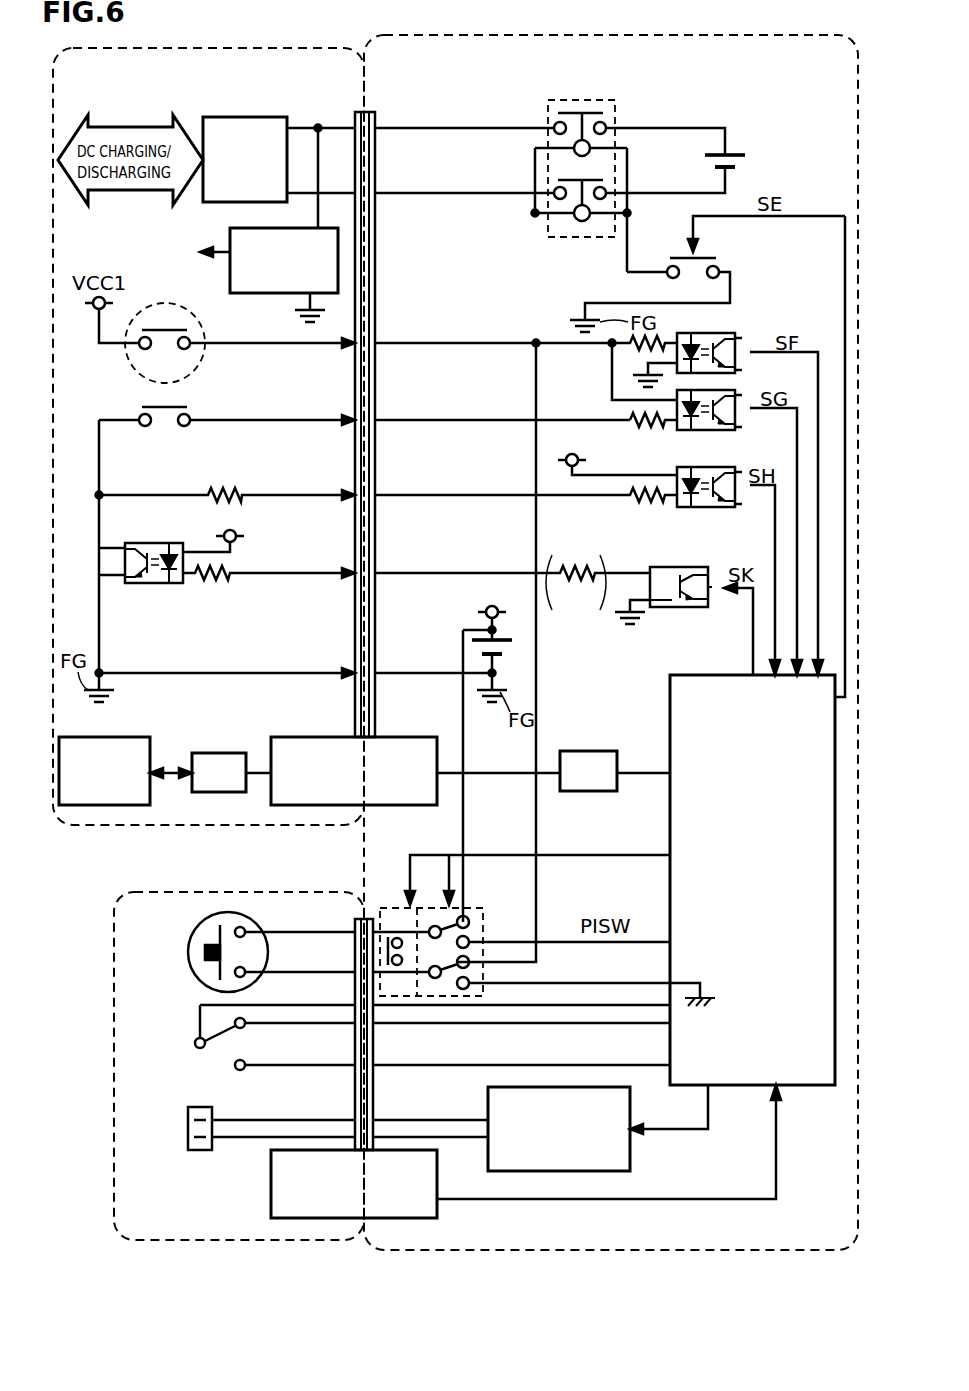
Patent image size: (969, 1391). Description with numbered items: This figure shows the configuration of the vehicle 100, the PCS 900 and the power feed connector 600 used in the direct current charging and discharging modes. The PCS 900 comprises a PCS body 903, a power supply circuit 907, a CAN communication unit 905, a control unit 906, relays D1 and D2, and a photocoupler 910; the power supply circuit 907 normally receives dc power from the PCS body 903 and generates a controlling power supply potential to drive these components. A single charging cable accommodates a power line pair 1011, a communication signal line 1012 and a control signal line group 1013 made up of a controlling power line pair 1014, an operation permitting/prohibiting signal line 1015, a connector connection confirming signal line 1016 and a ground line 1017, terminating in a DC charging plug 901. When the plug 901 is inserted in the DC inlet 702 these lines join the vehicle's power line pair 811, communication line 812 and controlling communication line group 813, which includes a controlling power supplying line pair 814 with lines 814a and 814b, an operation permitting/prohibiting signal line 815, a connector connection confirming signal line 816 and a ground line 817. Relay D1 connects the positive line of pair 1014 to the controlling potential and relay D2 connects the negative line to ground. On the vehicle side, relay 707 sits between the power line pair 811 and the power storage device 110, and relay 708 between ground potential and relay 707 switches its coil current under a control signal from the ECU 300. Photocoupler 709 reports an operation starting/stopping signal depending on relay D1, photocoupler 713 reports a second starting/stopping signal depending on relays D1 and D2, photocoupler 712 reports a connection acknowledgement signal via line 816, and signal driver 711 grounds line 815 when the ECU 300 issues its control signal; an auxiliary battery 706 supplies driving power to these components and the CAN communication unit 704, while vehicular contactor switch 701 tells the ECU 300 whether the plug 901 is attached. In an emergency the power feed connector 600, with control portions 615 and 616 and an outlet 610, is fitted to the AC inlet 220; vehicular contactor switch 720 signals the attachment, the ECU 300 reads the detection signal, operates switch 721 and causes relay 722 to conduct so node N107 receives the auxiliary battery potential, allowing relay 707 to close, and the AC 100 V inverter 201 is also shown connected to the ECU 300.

The PCS 900 is at (206, 48).
The vehicle 100 is at (616, 35).
The power feed connector 600 is at (114, 932).
The PCS body 903 is at (233, 117).
The power supply circuit 907 is at (283, 228).
The power line pair 1011 is at (325, 205).
The DC charging plug 901 is at (358, 112).
The DC inlet 702 is at (374, 112).
The power line pair 811 is at (432, 205).
The charging and discharging relay 707 is at (586, 100).
The power storage device 110 is at (735, 157).
The relay 708 is at (715, 258).
The relay D1 is at (176, 318).
The relay D2 is at (180, 402).
The controlling power line pair 1014 is at (262, 432).
The connector connection confirming signal line 1016 is at (282, 495).
The photocoupler 910 is at (155, 582).
The operation permitting/prohibiting signal line 1015 is at (282, 575).
The ground line 1017 is at (173, 673).
The controlling communication line group 813 is at (400, 343).
The controlling power supplying line pair 814 is at (450, 343).
The node N107 is at (536, 343).
The controlling power supplying line 814b is at (498, 651).
The line 814a is at (508, 397).
The photocoupler 709 is at (728, 333).
The photocoupler 713 is at (722, 430).
The connector connection confirming signal line 816 is at (495, 495).
The photocoupler 712 is at (700, 505).
The operation permitting/prohibiting signal line 815 is at (495, 573).
The signal driver 711 is at (666, 567).
The ground line 817 is at (440, 673).
The auxiliary battery 706 is at (513, 647).
The control unit 906 is at (108, 737).
The CAN communication unit 905 is at (208, 753).
The communication signal line 1012 is at (258, 773).
The control signal line group 1013 is at (312, 325).
The vehicular contactor switch 701 is at (370, 737).
The communication line 812 is at (498, 773).
The CAN communication unit 704 is at (590, 751).
The ECU 300 is at (712, 675).
The switch 721 is at (470, 908).
The relay 722 is at (393, 996).
The AC inlet 220 is at (365, 915).
The control portion 615 is at (188, 952).
The control portion 616 is at (218, 1053).
The outlet 610 is at (188, 1130).
The AC 100 V inverter 201 is at (632, 1150).
The vehicular contactor switch 720 is at (271, 1190).